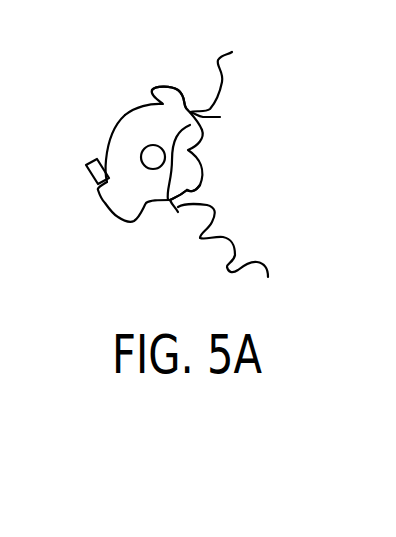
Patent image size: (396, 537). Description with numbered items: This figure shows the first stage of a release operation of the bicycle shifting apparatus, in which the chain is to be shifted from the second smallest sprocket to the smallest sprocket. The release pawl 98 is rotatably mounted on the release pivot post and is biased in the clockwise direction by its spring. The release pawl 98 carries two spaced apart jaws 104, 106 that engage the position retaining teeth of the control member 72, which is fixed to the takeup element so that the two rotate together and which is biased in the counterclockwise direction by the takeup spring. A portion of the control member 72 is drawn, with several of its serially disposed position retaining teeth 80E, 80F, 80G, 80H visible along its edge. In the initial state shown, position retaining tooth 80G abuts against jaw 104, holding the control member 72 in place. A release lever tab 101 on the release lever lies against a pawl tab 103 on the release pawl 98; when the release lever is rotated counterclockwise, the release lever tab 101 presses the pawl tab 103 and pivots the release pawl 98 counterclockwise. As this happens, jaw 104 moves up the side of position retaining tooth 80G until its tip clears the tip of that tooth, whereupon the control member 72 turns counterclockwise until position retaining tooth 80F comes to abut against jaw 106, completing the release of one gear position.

The control member 72 is at (298, 248).
The position retaining tooth 80E is at (197, 192).
The position retaining tooth 80F is at (193, 153).
The position retaining tooth 80G is at (220, 117).
The segment 80H is at (232, 52).
The release pawl 98 is at (122, 114).
The release lever tab 101 is at (87, 165).
The pawl tab 103 is at (100, 208).
The jaw 104 is at (201, 127).
The jaw 106 is at (170, 205).